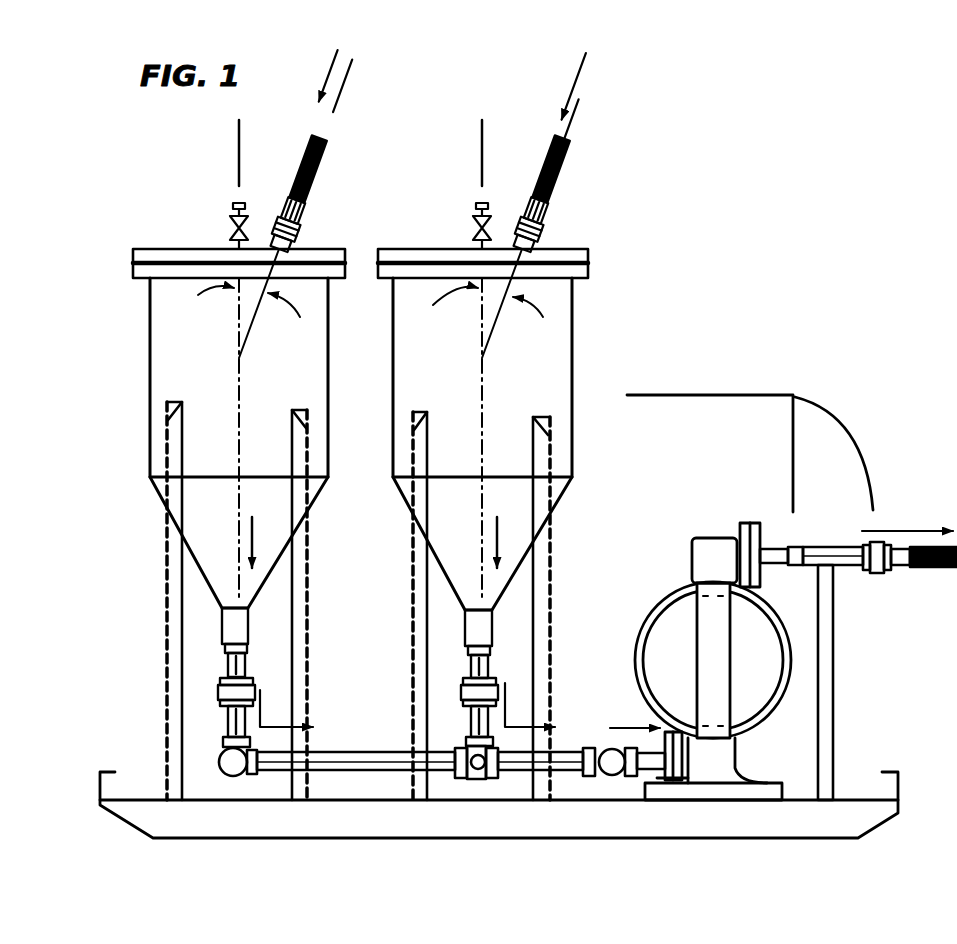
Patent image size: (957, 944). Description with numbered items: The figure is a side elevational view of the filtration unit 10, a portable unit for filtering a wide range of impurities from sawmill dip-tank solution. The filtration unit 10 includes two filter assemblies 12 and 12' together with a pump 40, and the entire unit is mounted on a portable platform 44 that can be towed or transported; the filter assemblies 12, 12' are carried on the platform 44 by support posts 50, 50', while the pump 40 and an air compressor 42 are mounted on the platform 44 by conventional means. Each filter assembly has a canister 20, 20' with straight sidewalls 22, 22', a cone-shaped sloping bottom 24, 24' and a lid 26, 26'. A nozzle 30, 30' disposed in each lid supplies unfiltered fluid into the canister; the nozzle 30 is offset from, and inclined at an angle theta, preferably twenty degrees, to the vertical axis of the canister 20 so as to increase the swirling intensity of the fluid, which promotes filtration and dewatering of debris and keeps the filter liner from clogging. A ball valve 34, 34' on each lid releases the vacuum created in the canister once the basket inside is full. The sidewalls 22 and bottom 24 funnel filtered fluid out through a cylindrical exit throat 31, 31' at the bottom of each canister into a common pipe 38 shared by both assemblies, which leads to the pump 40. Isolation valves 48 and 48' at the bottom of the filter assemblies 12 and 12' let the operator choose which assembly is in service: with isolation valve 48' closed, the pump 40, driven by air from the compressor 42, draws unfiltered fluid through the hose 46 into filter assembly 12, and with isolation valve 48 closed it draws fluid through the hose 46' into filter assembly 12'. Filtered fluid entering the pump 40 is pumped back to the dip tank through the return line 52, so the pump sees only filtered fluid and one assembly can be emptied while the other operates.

The filtration unit 10 is at (745, 231).
The filter assembly 12 is at (201, 425).
The second filter assembly 12' is at (526, 426).
The canister 20 is at (216, 377).
The canister of second filter assembly 20' is at (520, 377).
The straight sidewalls 22 is at (209, 601).
The straight sidewalls of second canister 22' is at (517, 553).
The sloping bottom 24 is at (226, 542).
The sloping bottom of second canister 24' is at (500, 550).
The lid 26 is at (228, 244).
The lid of second canister 26' is at (510, 251).
The nozzle 30 is at (308, 220).
The nozzle of second filter assembly 30' is at (559, 218).
The cylindrical exit throat 31 is at (221, 677).
The exit throat of second filter assembly 31' is at (529, 678).
The ball valve 34 is at (221, 205).
The ball valve of second filter assembly 34' is at (497, 201).
The common pipe 38 is at (572, 771).
The pump 40 is at (676, 593).
The air compressor 42 is at (808, 396).
The portable platform 44 is at (793, 823).
The hose 46 is at (326, 126).
The hose of second filter assembly 46' is at (578, 128).
The isolation valve 48 is at (271, 817).
The isolation valve of second filter assembly 48' is at (479, 817).
The support posts 50 is at (307, 685).
The support posts of second filter assembly 50' is at (461, 647).
The return line 52 is at (912, 570).